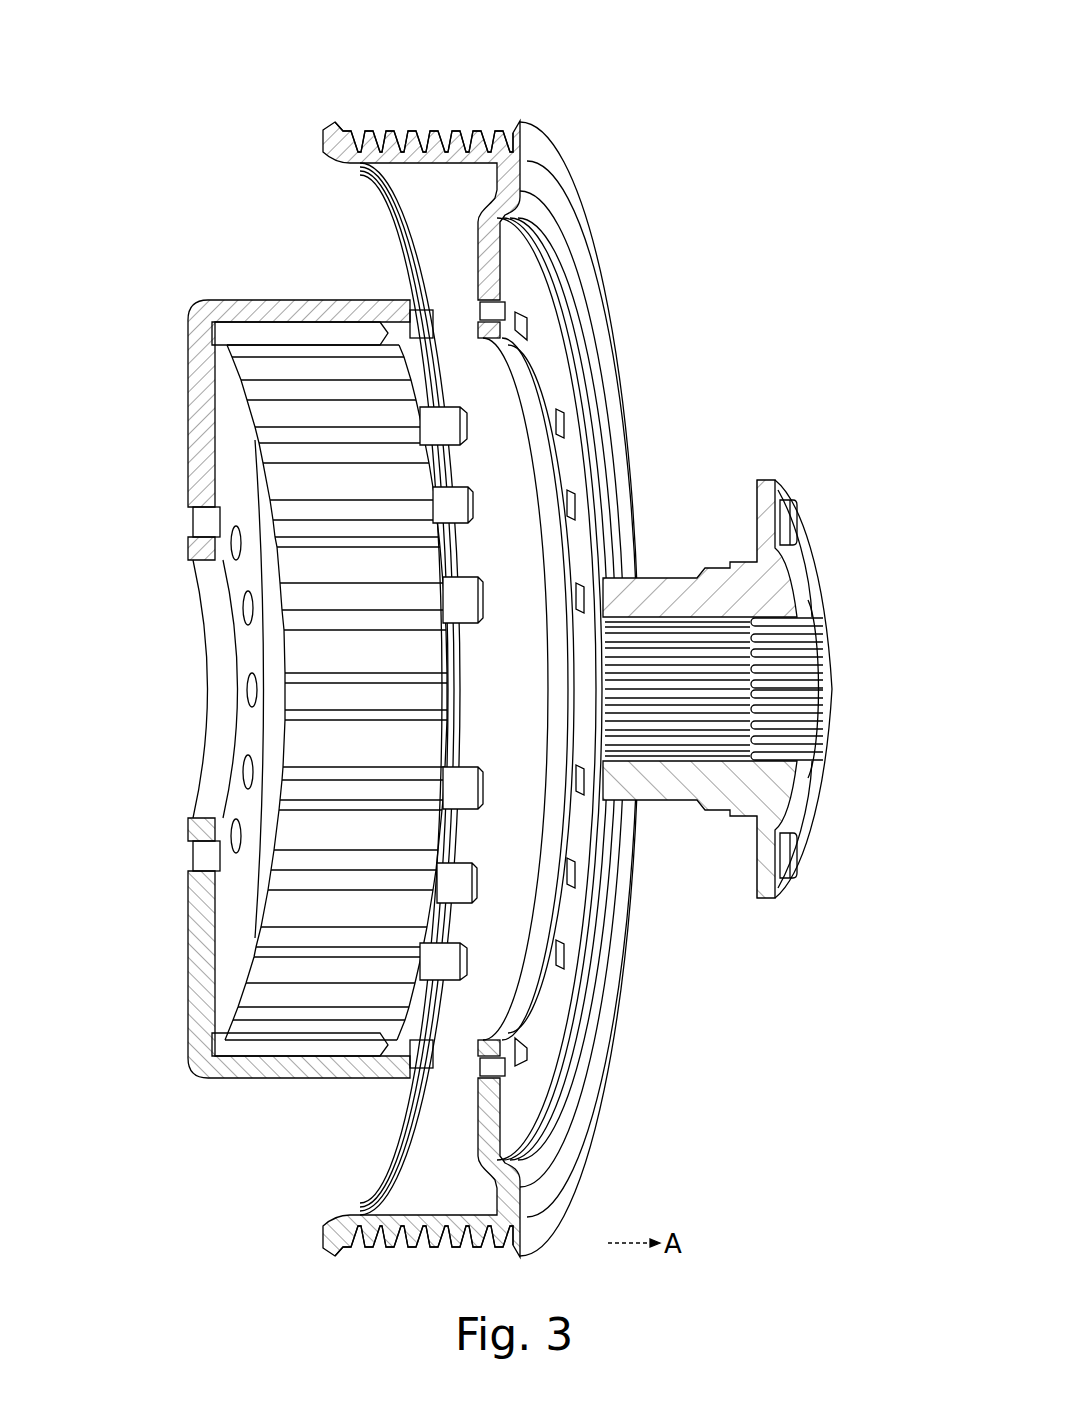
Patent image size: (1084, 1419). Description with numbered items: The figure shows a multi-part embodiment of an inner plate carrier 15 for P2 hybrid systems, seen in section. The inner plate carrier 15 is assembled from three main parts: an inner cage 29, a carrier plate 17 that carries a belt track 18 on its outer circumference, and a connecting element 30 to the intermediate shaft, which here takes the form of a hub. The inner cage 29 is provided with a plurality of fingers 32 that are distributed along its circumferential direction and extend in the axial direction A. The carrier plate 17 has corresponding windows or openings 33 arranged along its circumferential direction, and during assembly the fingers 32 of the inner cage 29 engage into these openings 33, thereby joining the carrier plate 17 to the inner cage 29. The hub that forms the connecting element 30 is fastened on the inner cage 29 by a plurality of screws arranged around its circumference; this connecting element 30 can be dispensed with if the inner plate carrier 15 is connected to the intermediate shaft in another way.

The inner plate carrier 15 is at (183, 140).
The carrier plate 17 is at (545, 157).
The belt track 18 is at (443, 138).
The inner cage 29 is at (203, 373).
The connecting element 30 is at (790, 580).
The fingers 32 is at (460, 420).
The openings 33 is at (527, 312).